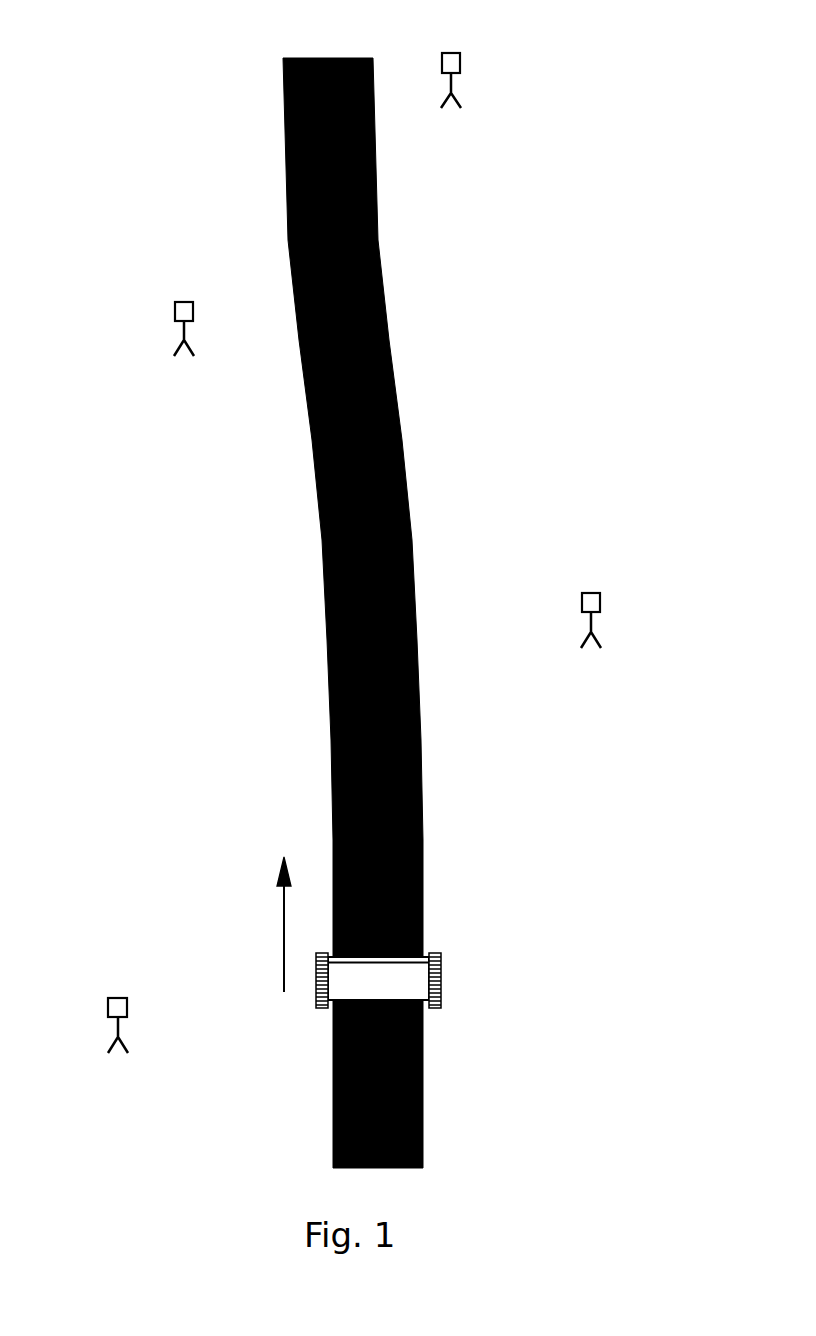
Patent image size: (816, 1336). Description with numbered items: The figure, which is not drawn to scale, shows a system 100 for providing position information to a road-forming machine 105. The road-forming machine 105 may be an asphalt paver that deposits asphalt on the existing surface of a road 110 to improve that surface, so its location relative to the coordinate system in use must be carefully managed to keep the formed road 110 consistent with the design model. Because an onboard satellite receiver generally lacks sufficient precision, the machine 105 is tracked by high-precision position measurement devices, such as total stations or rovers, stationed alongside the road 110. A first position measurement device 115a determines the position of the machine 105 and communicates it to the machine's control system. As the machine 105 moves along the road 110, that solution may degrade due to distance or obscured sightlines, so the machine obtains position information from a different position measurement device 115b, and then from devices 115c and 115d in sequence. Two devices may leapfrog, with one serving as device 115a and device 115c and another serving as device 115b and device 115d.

The system 100 is at (643, 66).
The road-forming machine 105 is at (441, 980).
The road 110 is at (322, 546).
The position measurement device 115a is at (127, 1007).
The position measurement device 115b is at (582, 603).
The position measurement device 115c is at (193, 311).
The position measurement device 115d is at (442, 63).